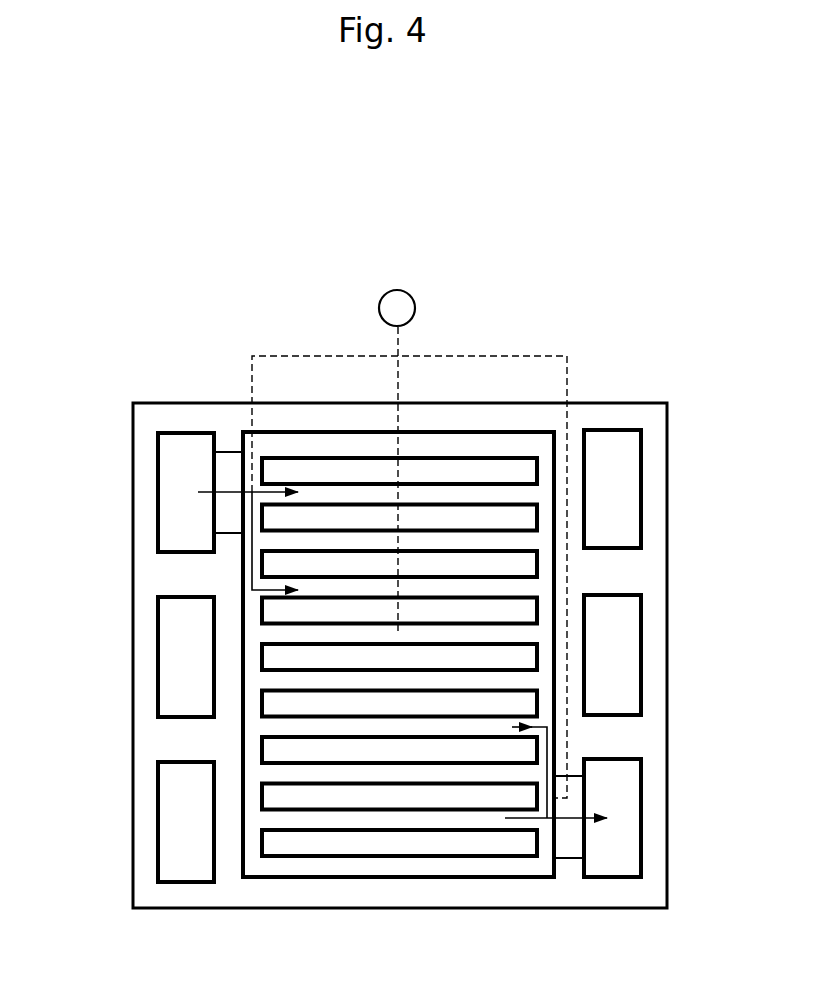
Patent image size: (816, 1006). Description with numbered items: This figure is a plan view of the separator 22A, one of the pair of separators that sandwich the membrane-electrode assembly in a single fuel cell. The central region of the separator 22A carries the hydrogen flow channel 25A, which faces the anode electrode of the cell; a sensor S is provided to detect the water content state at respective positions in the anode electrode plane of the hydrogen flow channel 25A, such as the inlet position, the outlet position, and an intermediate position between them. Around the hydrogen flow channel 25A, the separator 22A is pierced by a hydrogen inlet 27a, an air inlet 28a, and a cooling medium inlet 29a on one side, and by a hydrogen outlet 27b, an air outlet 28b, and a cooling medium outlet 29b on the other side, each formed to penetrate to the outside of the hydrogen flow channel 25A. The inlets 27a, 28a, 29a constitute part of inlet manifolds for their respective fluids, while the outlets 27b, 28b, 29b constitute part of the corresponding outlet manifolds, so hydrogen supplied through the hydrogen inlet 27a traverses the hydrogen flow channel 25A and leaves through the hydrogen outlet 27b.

The separator 22A is at (609, 396).
The hydrogen flow channel 25A is at (488, 818).
The hydrogen inlet 27a is at (165, 479).
The hydrogen outlet 27b is at (630, 815).
The air inlet 28a is at (165, 811).
The air outlet 28b is at (630, 503).
The cooling medium inlet 29a is at (165, 646).
The cooling medium outlet 29b is at (628, 657).